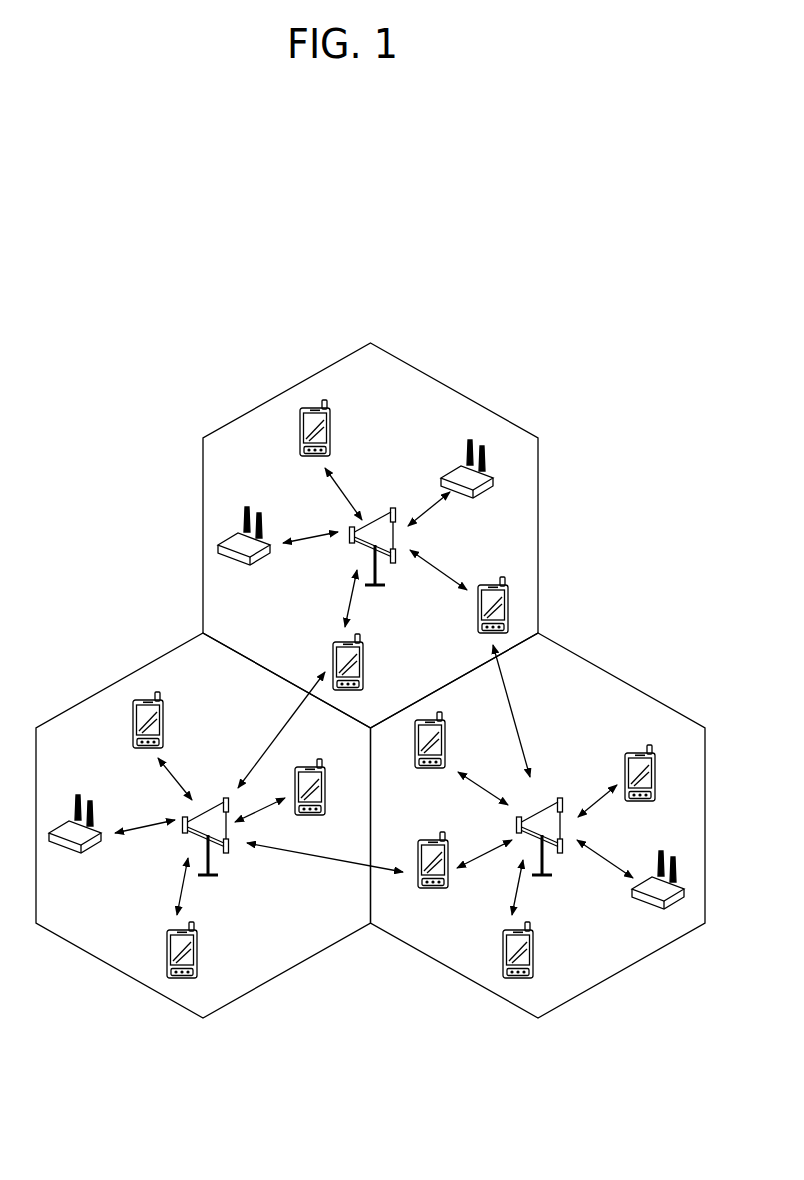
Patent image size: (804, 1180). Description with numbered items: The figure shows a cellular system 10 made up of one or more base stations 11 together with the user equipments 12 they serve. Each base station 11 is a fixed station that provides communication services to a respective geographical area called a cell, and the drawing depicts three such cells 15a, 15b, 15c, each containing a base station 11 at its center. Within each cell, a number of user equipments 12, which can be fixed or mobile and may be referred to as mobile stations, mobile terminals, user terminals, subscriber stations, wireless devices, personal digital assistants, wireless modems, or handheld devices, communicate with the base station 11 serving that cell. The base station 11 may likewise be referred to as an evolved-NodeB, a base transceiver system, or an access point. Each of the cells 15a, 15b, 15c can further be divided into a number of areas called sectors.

The cellular system 10 is at (609, 442).
The base station 11 is at (388, 513).
The user equipment 12 is at (331, 437).
The cell 15a is at (538, 522).
The cell 15b is at (648, 694).
The cell 15c is at (100, 690).